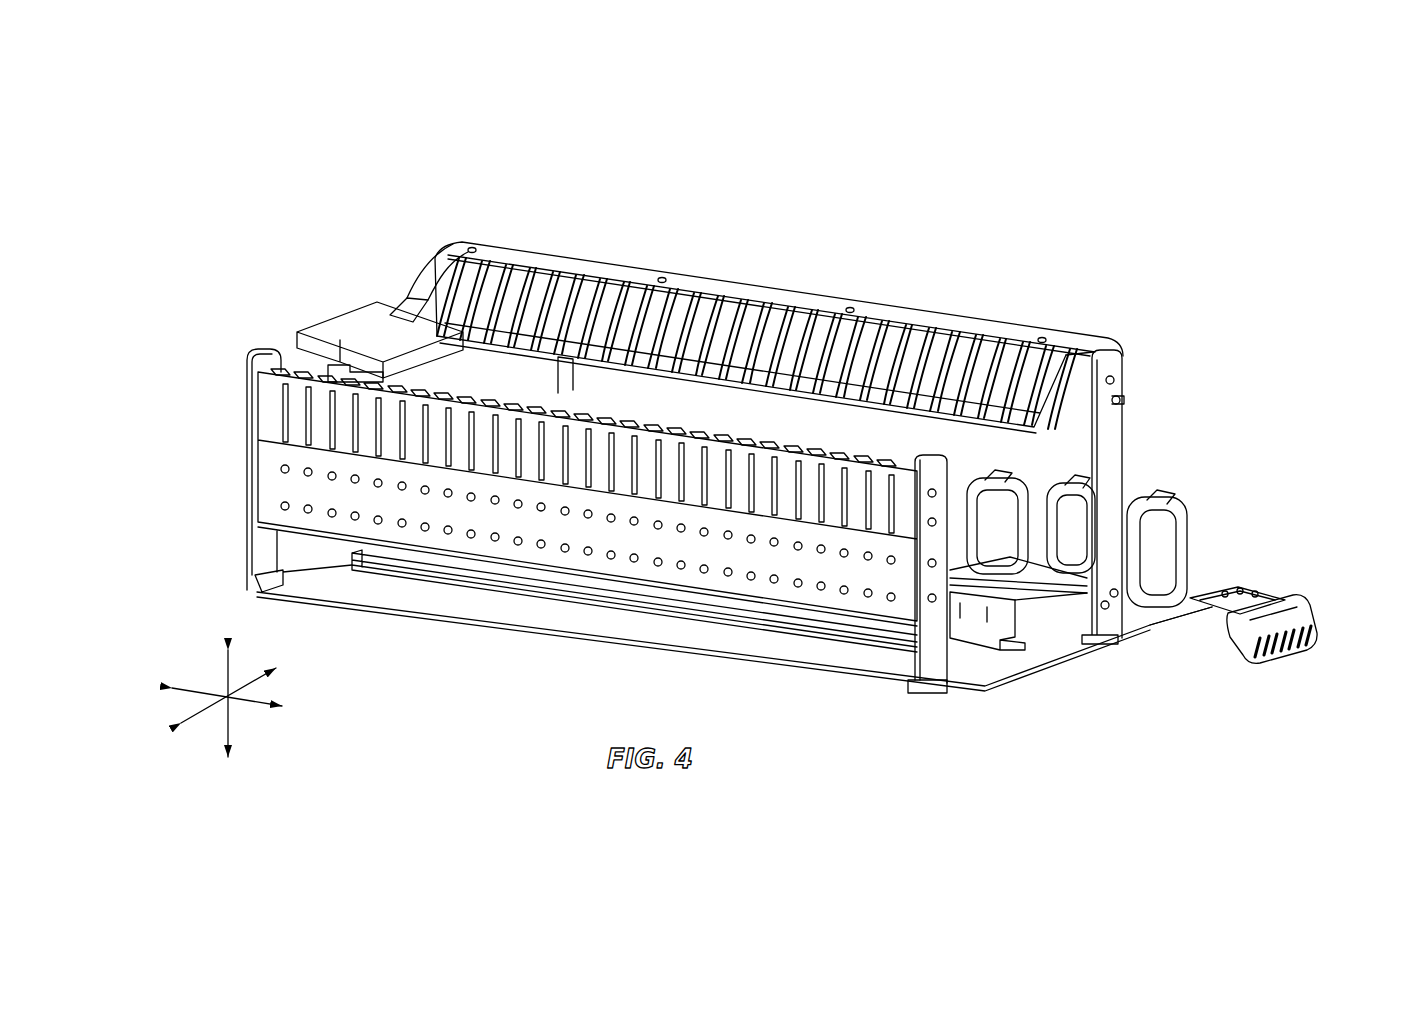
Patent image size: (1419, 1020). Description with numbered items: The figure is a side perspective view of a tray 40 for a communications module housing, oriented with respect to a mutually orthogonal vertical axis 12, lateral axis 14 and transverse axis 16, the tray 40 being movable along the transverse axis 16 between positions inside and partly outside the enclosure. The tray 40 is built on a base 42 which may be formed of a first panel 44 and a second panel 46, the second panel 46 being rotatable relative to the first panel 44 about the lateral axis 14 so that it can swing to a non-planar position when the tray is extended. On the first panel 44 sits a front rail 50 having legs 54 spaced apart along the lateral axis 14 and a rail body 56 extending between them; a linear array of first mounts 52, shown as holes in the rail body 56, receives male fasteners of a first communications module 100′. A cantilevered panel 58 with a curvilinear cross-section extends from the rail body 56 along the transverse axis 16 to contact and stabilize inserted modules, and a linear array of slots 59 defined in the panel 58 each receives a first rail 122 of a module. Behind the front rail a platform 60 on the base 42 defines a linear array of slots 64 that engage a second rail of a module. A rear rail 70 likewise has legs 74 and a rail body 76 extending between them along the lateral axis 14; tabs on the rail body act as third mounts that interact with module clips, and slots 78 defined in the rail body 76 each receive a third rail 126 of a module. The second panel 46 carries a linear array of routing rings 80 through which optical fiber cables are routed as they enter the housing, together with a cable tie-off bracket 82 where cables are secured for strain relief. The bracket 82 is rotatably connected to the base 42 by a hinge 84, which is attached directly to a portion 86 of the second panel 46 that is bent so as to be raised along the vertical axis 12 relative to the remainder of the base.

The tray 40 is at (848, 192).
The base 42 is at (997, 690).
The first panel 44 is at (963, 677).
The second panel 46 is at (1195, 596).
The front rail 50 is at (1152, 416).
The first mount 52 is at (1080, 360).
The leg 54 is at (1112, 457).
The rail body 56 is at (850, 295).
The panel 58 is at (1029, 366).
The slot 59 is at (900, 358).
The platform 60 is at (1052, 610).
The slot 64 is at (1035, 582).
The rear rail 70 is at (236, 392).
The leg 74 is at (258, 450).
The rail body 76 is at (343, 403).
The slot 78 is at (556, 465).
The routing ring 80 is at (1027, 474).
The cable tie-off bracket 82 is at (1328, 616).
The hinge 84 is at (1245, 600).
The portion 86 is at (1239, 589).
The first communications module 100′ is at (380, 293).
The first rail 122 is at (407, 297).
The third rail 126 is at (343, 370).
The vertical axis 12 is at (228, 662).
The lateral axis 14 is at (270, 705).
The transverse axis 16 is at (210, 716).